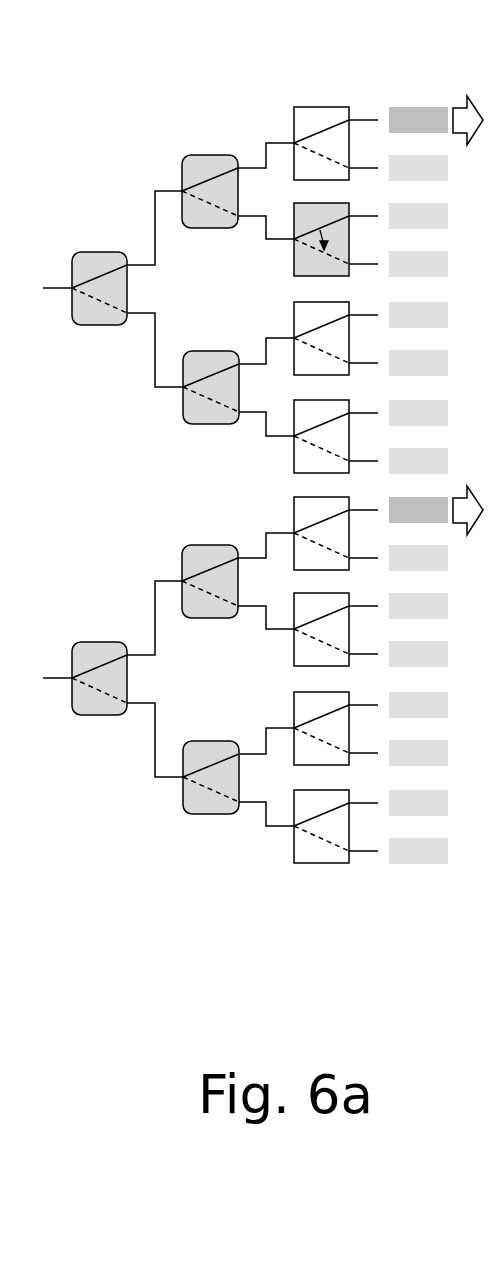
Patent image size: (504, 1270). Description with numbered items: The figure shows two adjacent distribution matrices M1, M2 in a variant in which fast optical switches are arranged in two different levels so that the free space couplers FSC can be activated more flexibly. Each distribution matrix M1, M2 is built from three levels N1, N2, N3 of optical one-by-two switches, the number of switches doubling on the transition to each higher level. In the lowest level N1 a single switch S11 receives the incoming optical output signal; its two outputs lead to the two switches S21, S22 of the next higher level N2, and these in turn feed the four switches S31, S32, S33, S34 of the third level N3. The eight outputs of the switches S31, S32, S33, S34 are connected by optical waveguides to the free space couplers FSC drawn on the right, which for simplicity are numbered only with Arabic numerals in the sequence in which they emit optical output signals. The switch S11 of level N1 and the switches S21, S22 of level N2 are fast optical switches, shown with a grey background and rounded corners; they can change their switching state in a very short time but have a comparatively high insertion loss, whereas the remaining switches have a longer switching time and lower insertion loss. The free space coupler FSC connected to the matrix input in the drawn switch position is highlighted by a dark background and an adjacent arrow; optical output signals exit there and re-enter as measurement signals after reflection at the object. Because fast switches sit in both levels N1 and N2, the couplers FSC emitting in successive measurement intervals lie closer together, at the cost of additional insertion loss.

The distribution matrix M1 is at (210, 251).
The distribution matrix M2 is at (210, 723).
The lowest level N1 is at (86, 310).
The next higher level N2 is at (156, 235).
The third level N3 is at (289, 242).
The first stage switch S11 is at (85, 253).
The second stage switch S21 is at (185, 181).
The second stage switch S22 is at (186, 416).
The third stage switch S31 is at (298, 118).
The third stage switch S32 is at (298, 258).
The third stage switch S33 is at (300, 318).
The third stage switch S34 is at (300, 459).
The free space coupler FSC is at (436, 467).